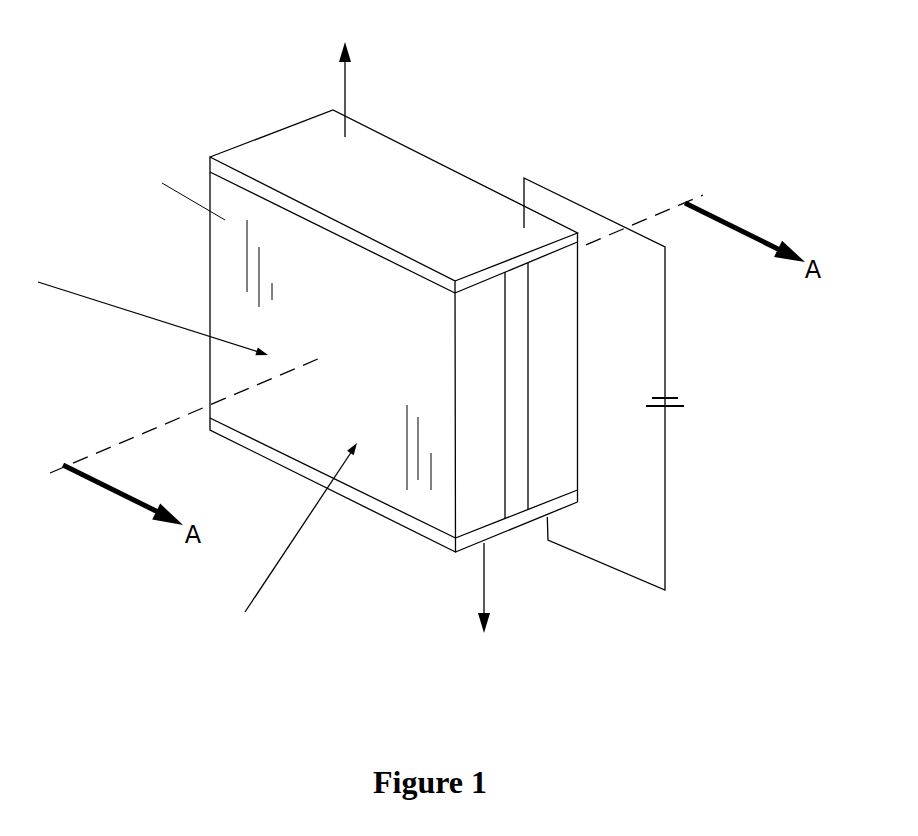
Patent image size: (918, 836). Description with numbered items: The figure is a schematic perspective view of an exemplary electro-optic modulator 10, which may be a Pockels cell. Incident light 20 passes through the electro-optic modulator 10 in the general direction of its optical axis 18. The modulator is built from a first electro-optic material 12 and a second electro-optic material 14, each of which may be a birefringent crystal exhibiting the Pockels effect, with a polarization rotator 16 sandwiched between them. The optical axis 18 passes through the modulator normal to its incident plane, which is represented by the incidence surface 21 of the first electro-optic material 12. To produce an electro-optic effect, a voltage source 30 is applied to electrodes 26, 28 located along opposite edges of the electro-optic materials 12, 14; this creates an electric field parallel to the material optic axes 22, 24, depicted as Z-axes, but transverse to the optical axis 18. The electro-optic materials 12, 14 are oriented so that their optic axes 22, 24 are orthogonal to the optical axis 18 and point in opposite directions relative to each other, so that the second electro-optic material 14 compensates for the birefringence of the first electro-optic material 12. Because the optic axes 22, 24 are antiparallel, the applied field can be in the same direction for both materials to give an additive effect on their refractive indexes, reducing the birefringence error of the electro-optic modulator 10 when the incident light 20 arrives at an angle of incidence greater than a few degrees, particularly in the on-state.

The electro-optic modulator 10 is at (398, 350).
The first electro-optic material 12 is at (482, 503).
The second electro-optic material 14 is at (567, 293).
The polarization rotator 16 is at (518, 442).
The optical axis 18 is at (148, 430).
The incident light 20 is at (103, 302).
The incidence surface 21 is at (293, 354).
The optic axis of first EO material 22 is at (350, 80).
The optic axis of second EO material 24 is at (480, 590).
The first electrode 26 is at (258, 157).
The second electrode 28 is at (418, 538).
The voltage source 30 is at (709, 438).